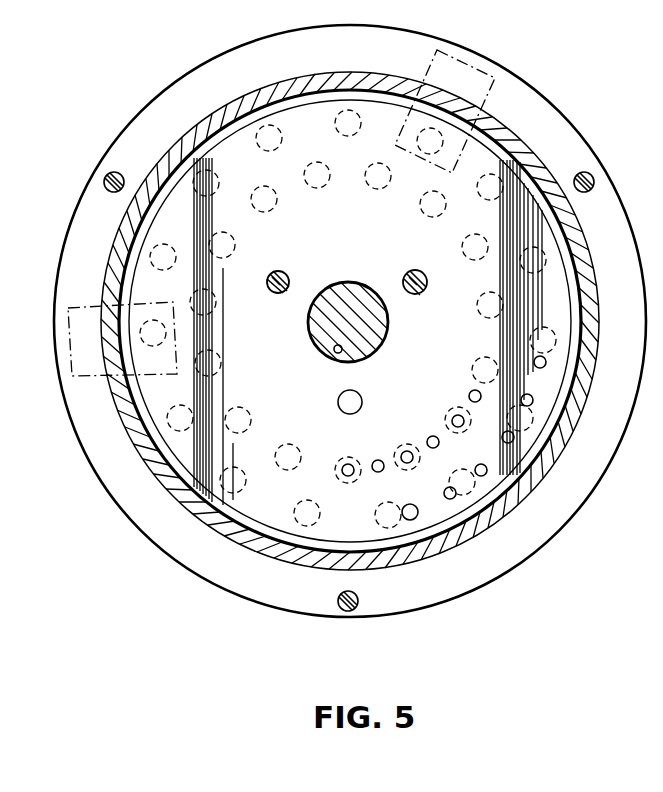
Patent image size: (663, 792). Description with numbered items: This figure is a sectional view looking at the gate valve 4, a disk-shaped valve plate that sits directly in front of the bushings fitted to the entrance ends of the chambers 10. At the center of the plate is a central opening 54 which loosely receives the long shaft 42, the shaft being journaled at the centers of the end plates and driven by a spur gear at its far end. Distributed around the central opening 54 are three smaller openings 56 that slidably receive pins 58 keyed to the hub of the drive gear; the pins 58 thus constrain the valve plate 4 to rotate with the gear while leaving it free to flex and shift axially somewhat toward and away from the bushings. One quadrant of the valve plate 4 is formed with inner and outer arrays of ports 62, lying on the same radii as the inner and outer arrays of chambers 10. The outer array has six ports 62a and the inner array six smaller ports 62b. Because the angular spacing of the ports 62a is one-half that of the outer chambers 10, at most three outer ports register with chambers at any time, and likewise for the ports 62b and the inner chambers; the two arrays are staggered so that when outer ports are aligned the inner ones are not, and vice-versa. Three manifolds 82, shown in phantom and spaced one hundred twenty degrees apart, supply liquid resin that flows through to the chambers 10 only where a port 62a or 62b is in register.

The gate valve 4 is at (279, 162).
The chambers 10 is at (252, 204).
The shaft 42 is at (352, 303).
The central opening 54 is at (335, 352).
The openings 56 is at (268, 284).
The pins 58 is at (289, 279).
The ports 62 is at (431, 502).
The outer-array ports 62a is at (529, 405).
The inner-array ports 62b is at (470, 396).
The manifolds 82 is at (495, 78).